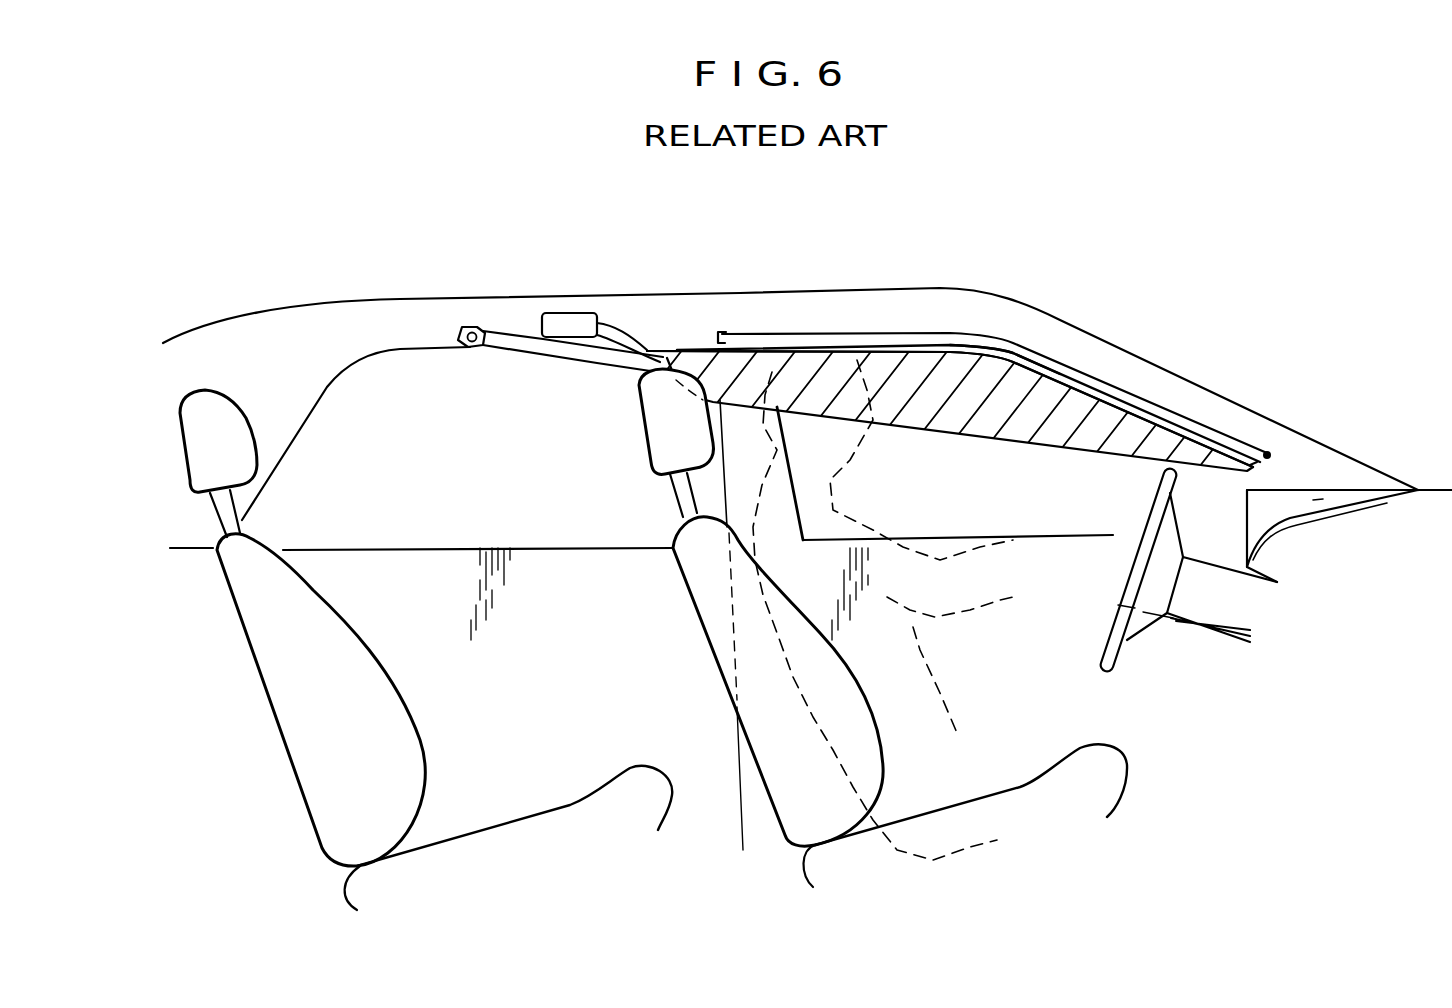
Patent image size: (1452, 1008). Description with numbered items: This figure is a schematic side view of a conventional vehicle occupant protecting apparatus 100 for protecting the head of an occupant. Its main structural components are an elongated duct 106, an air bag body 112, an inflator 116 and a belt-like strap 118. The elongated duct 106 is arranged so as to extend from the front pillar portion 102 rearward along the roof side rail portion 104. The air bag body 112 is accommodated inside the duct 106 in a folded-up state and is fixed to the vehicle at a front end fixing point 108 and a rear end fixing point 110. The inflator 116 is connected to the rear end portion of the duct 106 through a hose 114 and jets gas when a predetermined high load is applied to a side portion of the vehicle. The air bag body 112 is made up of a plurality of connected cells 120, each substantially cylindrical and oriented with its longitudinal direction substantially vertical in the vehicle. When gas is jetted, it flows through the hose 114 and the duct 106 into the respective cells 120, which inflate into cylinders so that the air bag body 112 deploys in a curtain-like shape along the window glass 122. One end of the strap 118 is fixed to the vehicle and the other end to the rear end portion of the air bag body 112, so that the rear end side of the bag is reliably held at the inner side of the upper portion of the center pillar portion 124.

The vehicle occupant protecting apparatus 100 is at (1090, 293).
The front pillar portion 102 is at (1178, 385).
The roof side rail portion 104 is at (828, 307).
The elongated duct 106 is at (707, 347).
The front end fixing point 108 is at (1267, 452).
The rear end fixing point 110 is at (720, 333).
The air bag body 112 is at (1005, 340).
The hose 114 is at (640, 337).
The inflator 116 is at (570, 317).
The belt-like strap 118 is at (497, 331).
The cells 120 is at (940, 368).
The window glass 122 is at (1040, 512).
The center pillar portion 124 is at (652, 455).